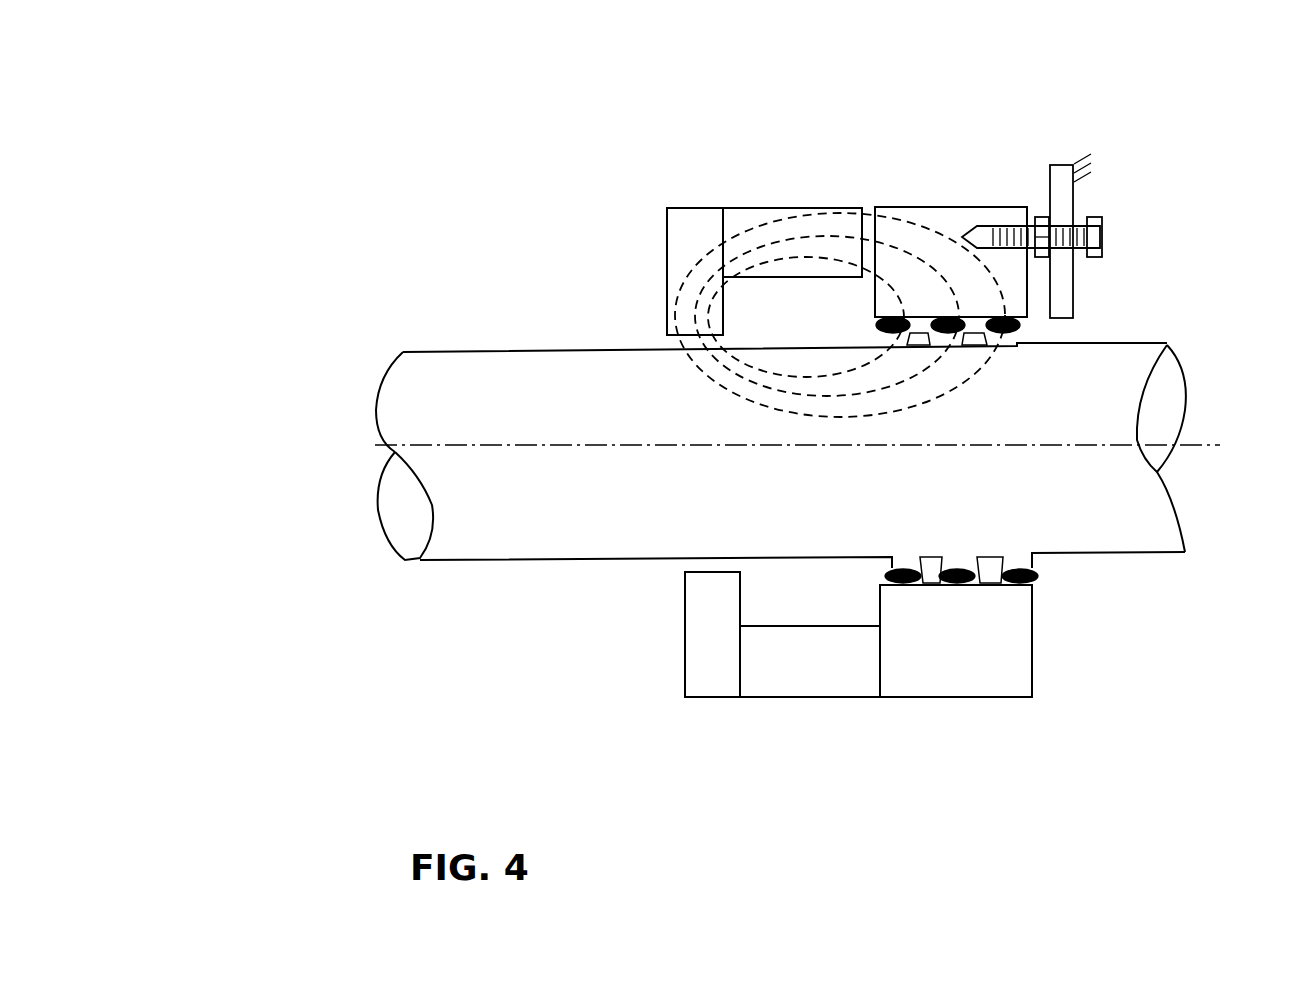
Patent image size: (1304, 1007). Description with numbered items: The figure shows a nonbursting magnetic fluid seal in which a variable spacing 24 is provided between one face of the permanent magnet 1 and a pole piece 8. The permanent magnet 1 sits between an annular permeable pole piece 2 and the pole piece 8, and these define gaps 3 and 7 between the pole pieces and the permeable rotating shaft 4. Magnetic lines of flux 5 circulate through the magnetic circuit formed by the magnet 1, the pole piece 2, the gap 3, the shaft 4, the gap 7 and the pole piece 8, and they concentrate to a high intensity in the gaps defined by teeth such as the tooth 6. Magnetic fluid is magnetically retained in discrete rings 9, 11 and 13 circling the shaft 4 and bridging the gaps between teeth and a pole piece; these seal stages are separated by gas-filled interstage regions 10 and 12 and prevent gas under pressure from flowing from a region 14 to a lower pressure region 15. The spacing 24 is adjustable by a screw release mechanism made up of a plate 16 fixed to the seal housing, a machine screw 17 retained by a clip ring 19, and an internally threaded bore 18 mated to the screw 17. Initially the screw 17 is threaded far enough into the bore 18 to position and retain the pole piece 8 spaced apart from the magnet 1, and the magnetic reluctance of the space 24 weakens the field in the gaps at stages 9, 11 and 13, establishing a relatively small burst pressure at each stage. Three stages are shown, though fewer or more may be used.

The permanent magnet 1 is at (793, 207).
The pole piece 2 is at (667, 248).
The gap 3 is at (918, 340).
The rotating shaft 4 is at (530, 349).
The magnetic lines of flux 5 is at (775, 222).
The tooth 6 is at (1017, 342).
The gap 7 is at (977, 340).
The pole piece 8 is at (940, 207).
The ring of magnetic fluid 9 is at (1037, 578).
The interstage region 10 is at (990, 572).
The ring of magnetic fluid 11 is at (967, 585).
The interstage region 12 is at (933, 575).
The ring of magnetic fluid 13 is at (910, 585).
The region 14 is at (713, 634).
The lower pressure region 15 is at (1197, 391).
The plate 16 is at (1063, 163).
The machine screw 17 is at (1102, 222).
The internally threaded bore 18 is at (985, 227).
The clip ring 19 is at (1042, 257).
The variable spacing 24 is at (866, 215).